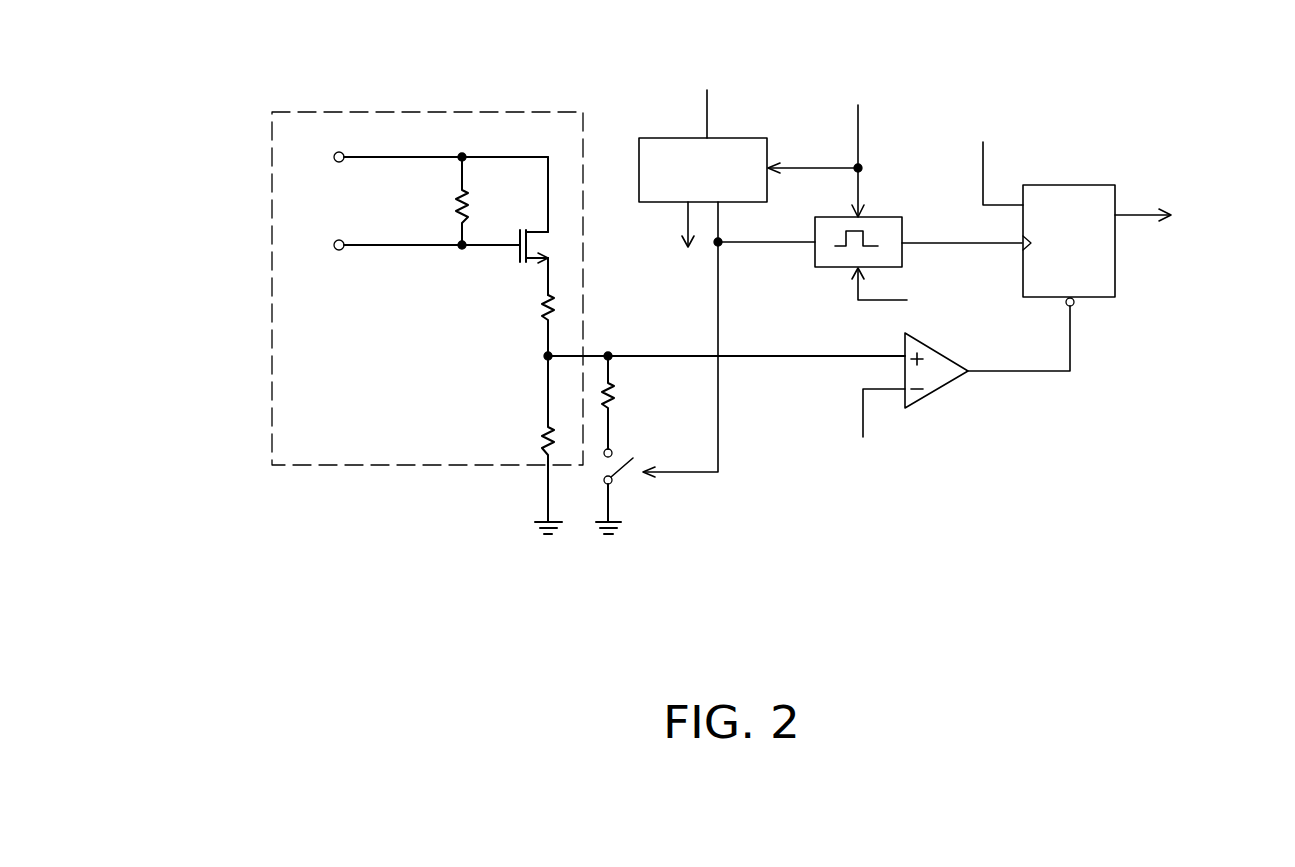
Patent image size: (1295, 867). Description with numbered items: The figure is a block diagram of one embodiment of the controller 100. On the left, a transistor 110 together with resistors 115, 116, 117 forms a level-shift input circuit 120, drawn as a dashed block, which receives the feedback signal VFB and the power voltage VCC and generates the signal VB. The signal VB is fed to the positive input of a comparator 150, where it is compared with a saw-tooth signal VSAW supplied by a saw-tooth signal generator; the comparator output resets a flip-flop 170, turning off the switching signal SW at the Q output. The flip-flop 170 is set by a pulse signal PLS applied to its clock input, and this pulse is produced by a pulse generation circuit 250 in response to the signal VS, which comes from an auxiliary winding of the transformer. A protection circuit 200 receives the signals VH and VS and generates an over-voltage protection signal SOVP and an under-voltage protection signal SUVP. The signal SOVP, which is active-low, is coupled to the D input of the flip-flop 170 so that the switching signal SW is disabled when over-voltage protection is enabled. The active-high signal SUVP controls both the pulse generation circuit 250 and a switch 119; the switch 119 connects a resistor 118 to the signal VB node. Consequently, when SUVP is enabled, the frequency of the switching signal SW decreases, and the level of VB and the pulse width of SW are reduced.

The controller 100 is at (1285, 55).
The level-shift input circuit 120 is at (388, 112).
The transistor 110 is at (538, 230).
The resistor 115 is at (456, 204).
The resistor 116 is at (560, 296).
The resistor 117 is at (546, 432).
The resistor 118 is at (614, 385).
The switch 119 is at (620, 478).
The protection circuit 200 is at (733, 138).
The pulse generation circuit 250 is at (885, 216).
The flip-flop 170 is at (1068, 185).
The comparator 150 is at (948, 385).